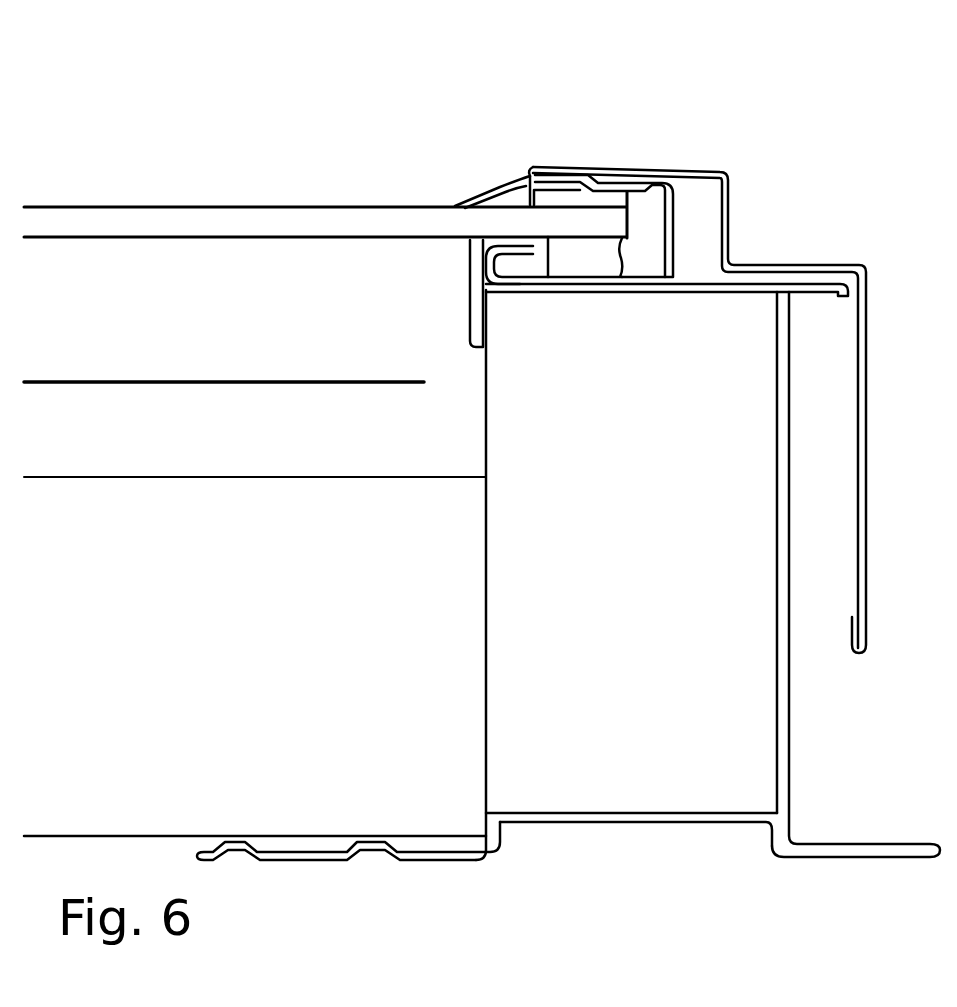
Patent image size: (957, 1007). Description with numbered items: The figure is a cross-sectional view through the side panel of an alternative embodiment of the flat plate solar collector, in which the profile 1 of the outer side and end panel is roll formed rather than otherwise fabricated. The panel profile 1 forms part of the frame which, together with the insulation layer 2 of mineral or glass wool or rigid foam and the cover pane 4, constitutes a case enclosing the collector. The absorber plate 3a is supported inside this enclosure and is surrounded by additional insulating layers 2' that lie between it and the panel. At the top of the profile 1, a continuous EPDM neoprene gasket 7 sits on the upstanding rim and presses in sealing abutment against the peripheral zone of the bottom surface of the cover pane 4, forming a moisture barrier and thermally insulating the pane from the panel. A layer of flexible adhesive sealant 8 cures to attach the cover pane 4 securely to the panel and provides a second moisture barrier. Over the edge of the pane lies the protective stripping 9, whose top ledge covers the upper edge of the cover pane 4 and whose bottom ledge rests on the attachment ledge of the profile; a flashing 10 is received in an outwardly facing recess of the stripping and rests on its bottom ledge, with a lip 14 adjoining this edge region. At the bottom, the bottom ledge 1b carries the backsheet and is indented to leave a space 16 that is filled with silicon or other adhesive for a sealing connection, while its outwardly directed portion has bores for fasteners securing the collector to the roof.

The side panel 1 is at (787, 730).
The bottom ledge 1b is at (653, 813).
The insulation layer 2 is at (255, 656).
The additional insulating layer 2' is at (626, 575).
The absorber plate 3a is at (126, 380).
The cover pane 4 is at (275, 217).
The gasket 7 is at (482, 245).
The layer of flexible adhesive sealant 8 is at (567, 258).
The protective stripping 9 is at (630, 200).
The flashing 10 is at (737, 182).
The lip 14 is at (497, 188).
The space 16 is at (303, 852).